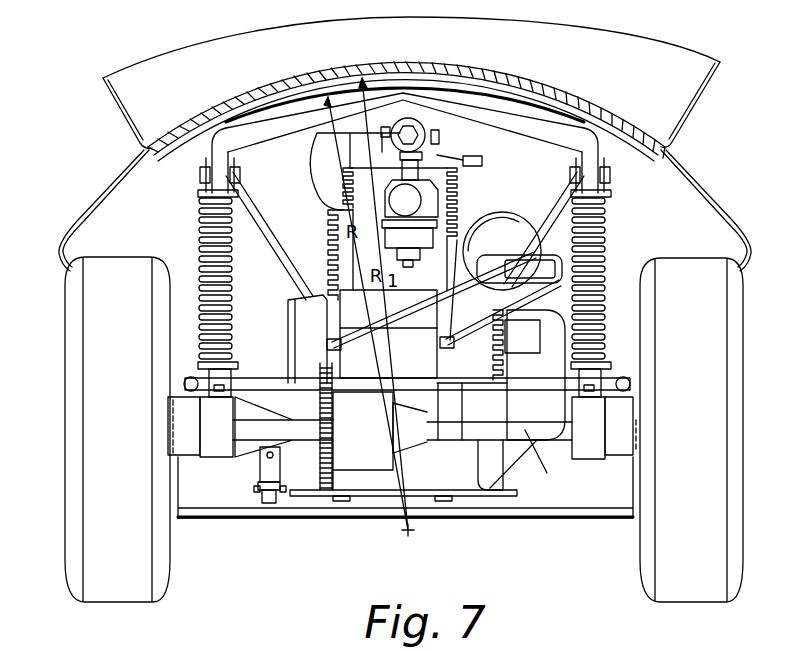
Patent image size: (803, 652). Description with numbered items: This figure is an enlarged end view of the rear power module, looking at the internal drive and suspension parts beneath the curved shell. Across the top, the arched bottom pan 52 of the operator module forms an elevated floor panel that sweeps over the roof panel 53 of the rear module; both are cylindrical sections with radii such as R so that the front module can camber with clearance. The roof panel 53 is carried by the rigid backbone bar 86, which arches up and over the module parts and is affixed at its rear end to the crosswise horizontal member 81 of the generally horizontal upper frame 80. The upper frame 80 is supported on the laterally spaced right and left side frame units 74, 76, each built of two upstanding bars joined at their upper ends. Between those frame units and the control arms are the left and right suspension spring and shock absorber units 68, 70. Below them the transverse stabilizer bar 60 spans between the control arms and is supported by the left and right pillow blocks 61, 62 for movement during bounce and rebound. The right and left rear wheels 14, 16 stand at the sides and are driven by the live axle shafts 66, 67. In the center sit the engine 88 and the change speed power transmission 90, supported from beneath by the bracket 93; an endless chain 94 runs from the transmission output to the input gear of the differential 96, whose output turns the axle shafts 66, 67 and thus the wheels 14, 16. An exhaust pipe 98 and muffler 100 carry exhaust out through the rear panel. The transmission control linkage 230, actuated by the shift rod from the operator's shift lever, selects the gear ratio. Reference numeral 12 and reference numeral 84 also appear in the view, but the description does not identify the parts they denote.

The vehicle body 12 is at (187, 195).
The right side rear wheel 14 is at (702, 497).
The left side rear wheel 16 is at (108, 497).
The arched bottom pan 52 is at (647, 128).
The roof panel 53 is at (427, 67).
The transverse stabilizer bar 60 is at (440, 353).
The left pillow block 61 is at (223, 377).
The right pillow block 62 is at (602, 380).
The live axle shaft 66 is at (535, 460).
The live axle shaft 67 is at (262, 428).
The left side suspension spring and shock absorber unit 68 is at (268, 242).
The right side suspension spring and shock absorber unit 70 is at (607, 243).
The right side frame unit 74 is at (590, 157).
The left side frame unit 76 is at (231, 152).
The upper frame 80 is at (322, 88).
The crosswise horizontal member 81 is at (457, 97).
The frame rail 84 is at (232, 125).
The rigid backbone bar 86 is at (397, 80).
The engine 88 is at (478, 222).
The change speed power transmission 90 is at (452, 400).
The bracket 93 is at (422, 494).
The endless chain 94 is at (323, 360).
The differential 96 is at (372, 462).
The exhaust pipe 98 is at (538, 285).
The muffler 100 is at (538, 217).
The transmission control linkage 230 is at (263, 498).